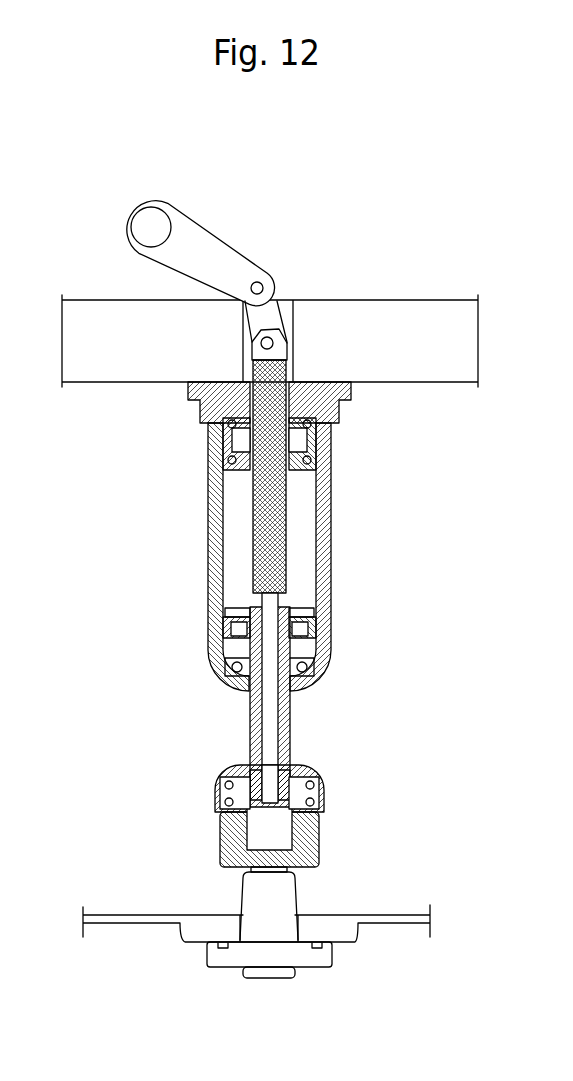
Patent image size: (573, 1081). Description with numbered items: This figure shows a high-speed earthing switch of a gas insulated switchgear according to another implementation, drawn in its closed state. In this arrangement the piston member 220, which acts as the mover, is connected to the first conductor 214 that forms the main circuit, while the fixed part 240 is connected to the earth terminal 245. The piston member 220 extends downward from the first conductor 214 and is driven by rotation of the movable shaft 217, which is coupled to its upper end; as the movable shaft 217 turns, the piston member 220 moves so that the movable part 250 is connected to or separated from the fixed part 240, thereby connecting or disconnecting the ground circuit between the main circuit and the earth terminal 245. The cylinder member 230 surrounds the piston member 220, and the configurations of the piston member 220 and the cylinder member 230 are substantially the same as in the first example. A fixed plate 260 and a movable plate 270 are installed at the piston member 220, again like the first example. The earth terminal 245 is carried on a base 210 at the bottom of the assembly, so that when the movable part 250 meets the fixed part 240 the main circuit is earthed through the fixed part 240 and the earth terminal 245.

The base plate 210 is at (390, 925).
The first conductor 214 is at (407, 326).
The movable shaft 217 is at (221, 238).
The piston member 220 is at (268, 522).
The housing 230 is at (323, 527).
The fixed part 240 is at (211, 824).
The earth terminal 245 is at (270, 926).
The movable part 250 is at (222, 439).
The fixed plate 260 is at (313, 625).
The movable plate 270 is at (306, 605).